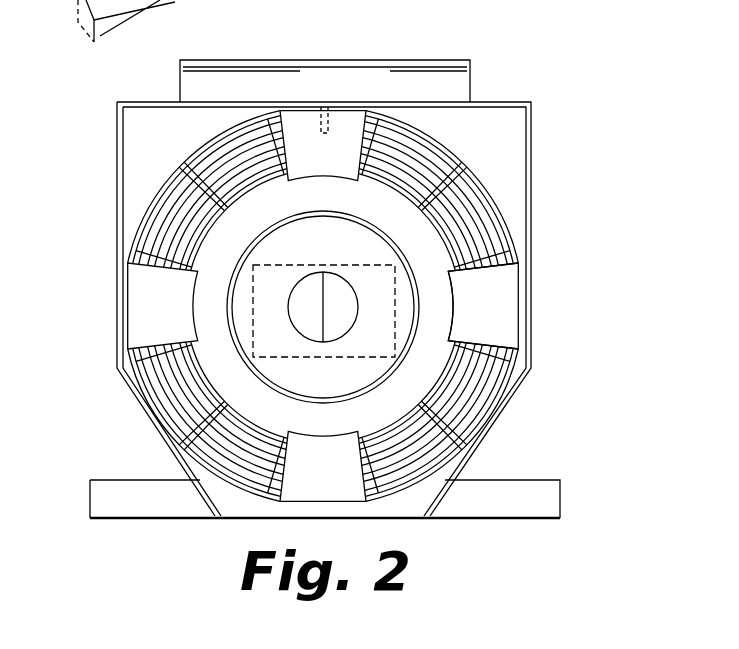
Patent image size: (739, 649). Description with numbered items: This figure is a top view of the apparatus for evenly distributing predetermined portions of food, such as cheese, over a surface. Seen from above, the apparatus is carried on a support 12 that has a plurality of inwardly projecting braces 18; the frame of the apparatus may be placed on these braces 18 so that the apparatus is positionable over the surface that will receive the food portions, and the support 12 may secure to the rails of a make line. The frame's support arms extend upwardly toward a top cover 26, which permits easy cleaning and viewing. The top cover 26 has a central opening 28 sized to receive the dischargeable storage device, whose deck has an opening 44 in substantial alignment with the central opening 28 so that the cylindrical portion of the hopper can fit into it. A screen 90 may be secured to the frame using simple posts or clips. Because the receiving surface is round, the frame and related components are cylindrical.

The support 12 is at (528, 500).
The inwardly projecting braces 18 is at (327, 117).
The top cover 26 is at (440, 297).
The central opening 28 is at (272, 263).
The opening 44 is at (503, 317).
The screen 90 is at (455, 176).